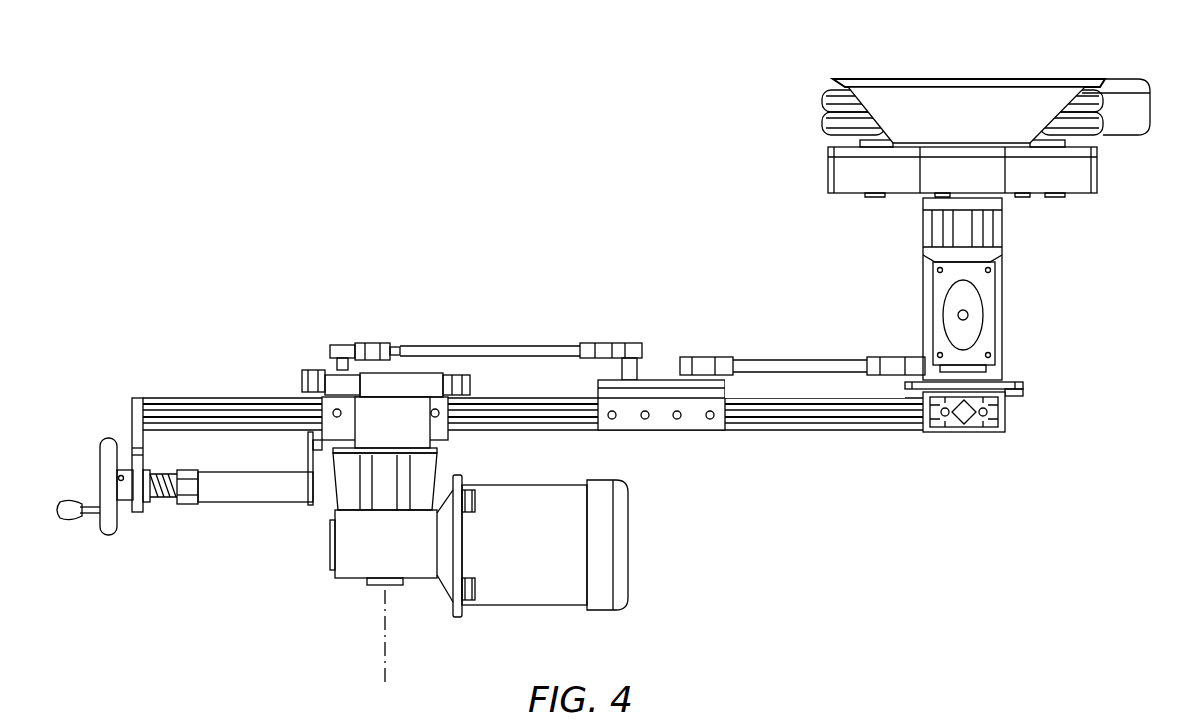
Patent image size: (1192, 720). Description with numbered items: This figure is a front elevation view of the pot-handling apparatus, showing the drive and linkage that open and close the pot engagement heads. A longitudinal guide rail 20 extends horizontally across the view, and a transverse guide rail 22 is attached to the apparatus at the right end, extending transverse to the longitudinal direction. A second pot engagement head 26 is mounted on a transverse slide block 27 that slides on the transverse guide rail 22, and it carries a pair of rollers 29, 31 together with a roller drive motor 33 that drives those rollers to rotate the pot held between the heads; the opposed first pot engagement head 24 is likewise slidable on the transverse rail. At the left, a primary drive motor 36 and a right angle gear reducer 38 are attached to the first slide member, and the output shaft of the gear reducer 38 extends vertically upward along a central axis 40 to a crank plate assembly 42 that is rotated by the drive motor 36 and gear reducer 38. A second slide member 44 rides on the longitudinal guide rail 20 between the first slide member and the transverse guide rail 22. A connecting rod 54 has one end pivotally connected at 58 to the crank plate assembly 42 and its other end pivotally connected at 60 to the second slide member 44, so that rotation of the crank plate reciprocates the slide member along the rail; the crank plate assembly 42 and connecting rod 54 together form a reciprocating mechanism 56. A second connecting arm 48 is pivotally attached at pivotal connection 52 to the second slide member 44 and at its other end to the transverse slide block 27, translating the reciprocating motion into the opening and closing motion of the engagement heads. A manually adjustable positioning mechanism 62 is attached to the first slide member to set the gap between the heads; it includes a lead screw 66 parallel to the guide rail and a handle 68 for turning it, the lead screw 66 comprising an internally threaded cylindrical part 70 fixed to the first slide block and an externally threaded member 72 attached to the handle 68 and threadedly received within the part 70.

The second longitudinal guide rail 20 is at (197, 413).
The transverse guide rail 22 is at (963, 430).
The first pot engagement head 24 is at (440, 430).
The second pot engagement head 26 is at (860, 175).
The transverse slide block 27 is at (1013, 398).
The roller 29 is at (822, 100).
The roller 31 is at (1095, 100).
The roller drive motor 33 is at (985, 225).
The primary drive motor 36 is at (600, 538).
The right angle gear reducer 38 is at (367, 552).
The central axis 40 is at (386, 655).
The crank plate assembly 42 is at (348, 334).
The second slide member 44 is at (697, 430).
The second connecting arm 48 is at (802, 349).
The pivotal connection 52 is at (690, 357).
The connecting rod 54 is at (529, 331).
The reciprocating mechanism 56 is at (442, 334).
The pivotal connection 58 is at (345, 342).
The pivotal connection 60 is at (632, 345).
The manually adjustable positioning mechanism 62 is at (185, 535).
The lead screw 66 is at (220, 511).
The handle 68 is at (108, 536).
The internally threaded cylindrical part 70 is at (247, 492).
The externally threaded member 72 is at (153, 495).